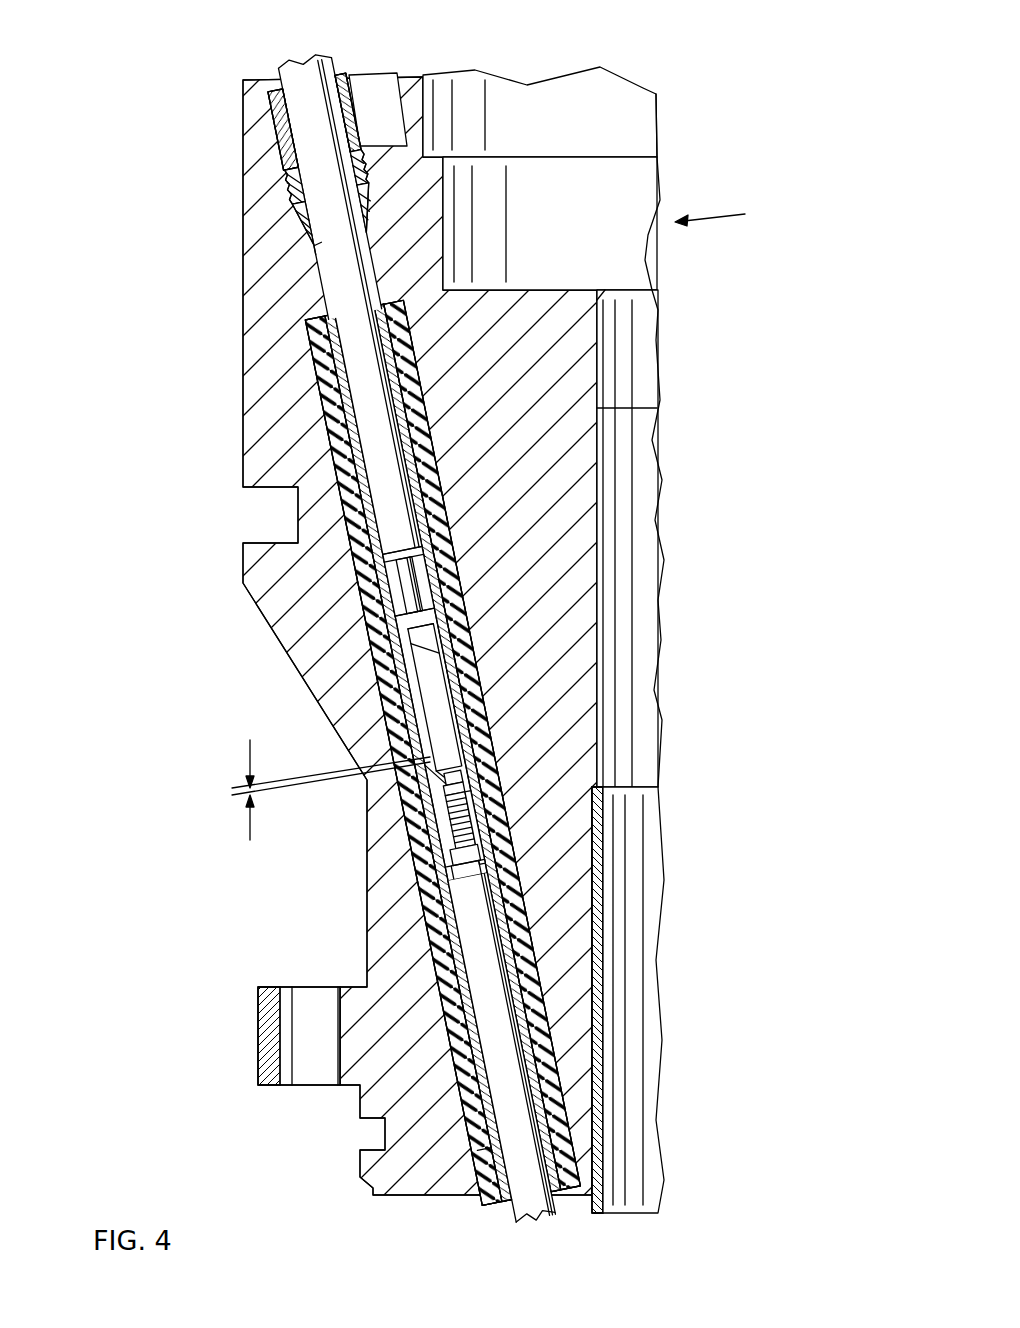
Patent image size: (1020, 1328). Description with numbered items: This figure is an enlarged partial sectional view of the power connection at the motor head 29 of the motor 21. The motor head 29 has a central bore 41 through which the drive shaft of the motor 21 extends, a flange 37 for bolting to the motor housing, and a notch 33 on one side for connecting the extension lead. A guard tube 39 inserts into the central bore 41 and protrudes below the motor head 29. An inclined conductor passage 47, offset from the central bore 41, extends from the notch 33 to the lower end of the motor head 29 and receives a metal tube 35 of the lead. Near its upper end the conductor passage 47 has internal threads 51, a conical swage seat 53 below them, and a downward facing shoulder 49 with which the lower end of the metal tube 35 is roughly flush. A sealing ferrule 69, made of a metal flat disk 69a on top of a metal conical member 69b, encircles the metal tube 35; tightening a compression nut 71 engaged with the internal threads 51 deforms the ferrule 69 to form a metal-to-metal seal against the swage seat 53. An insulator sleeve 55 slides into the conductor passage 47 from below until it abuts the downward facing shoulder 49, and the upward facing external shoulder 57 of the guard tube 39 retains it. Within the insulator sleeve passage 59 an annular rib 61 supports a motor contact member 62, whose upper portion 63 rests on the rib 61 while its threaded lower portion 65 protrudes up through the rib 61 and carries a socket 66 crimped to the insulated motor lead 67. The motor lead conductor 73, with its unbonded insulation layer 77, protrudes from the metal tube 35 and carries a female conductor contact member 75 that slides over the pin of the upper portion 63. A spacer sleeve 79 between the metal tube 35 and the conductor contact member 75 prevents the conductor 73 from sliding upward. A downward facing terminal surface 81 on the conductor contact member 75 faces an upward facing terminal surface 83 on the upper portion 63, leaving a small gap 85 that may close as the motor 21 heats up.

The motor 21 is at (727, 214).
The motor head 29 is at (405, 75).
The notch 33 is at (262, 170).
The metal tube 35 is at (289, 73).
The flange 37 is at (258, 1058).
The guard tube 39 is at (600, 1098).
The central bore 41 is at (605, 410).
The conductor passage 47 is at (345, 467).
The downward facing shoulder 49 is at (310, 337).
The internal threads 51 is at (285, 173).
The swage seat 53 is at (322, 244).
The insulator sleeve 55 is at (395, 875).
The upward facing external shoulder 57 is at (600, 1160).
The insulator sleeve passage 59 is at (470, 1110).
The annular rib 61 is at (455, 780).
The motor contact member 62 is at (520, 765).
The motor contact member upper portion 63 is at (427, 707).
The motor contact member lower portion 65 is at (400, 845).
The socket 66 is at (520, 830).
The motor lead 67 is at (465, 925).
The sealing ferrule 69 is at (290, 225).
The metal flat disk 69a is at (377, 207).
The metal conical member 69b is at (373, 228).
The compression nut 71 is at (272, 113).
The motor lead conductor 73 is at (407, 572).
The conductor contact member 75 is at (397, 613).
The insulation layer 77 is at (362, 395).
The spacer sleeve 79 is at (323, 423).
The terminal surface 81 is at (470, 750).
The terminal surface 83 is at (430, 755).
The gap 85 is at (248, 792).